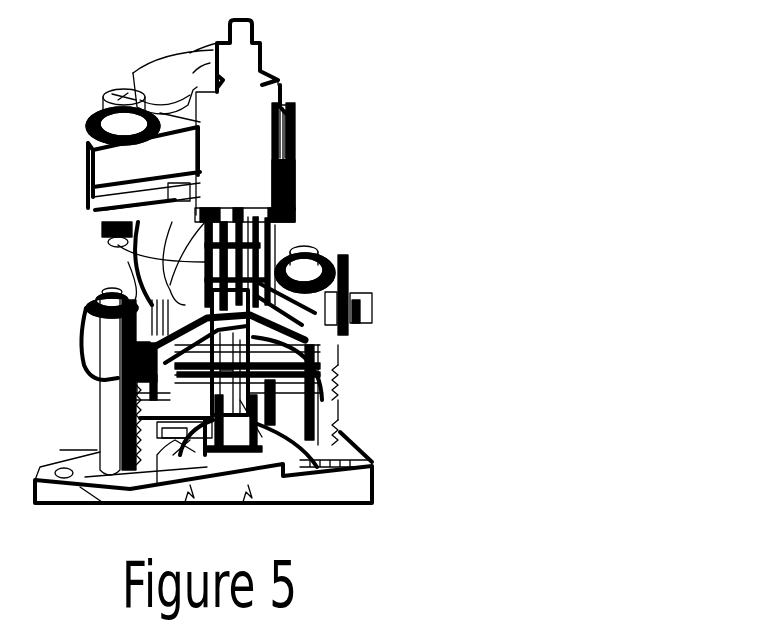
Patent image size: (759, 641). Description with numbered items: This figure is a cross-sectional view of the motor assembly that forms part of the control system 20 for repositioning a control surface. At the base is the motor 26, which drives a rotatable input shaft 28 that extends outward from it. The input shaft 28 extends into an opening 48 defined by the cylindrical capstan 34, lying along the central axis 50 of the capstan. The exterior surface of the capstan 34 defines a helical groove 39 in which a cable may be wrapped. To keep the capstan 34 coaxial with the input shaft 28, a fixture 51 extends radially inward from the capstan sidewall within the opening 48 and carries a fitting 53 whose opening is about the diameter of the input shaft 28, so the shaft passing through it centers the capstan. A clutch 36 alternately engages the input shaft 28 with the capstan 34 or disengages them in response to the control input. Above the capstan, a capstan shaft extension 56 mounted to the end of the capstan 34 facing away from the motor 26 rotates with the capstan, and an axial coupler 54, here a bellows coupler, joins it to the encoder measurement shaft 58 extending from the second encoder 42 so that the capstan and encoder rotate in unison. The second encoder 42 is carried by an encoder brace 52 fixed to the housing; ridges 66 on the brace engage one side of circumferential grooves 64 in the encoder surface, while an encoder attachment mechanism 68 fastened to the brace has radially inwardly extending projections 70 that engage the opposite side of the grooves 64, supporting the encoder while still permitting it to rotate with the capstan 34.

The control system 20 is at (418, 213).
The motor 26 is at (360, 485).
The input shaft 28 is at (230, 393).
The capstan 34 is at (332, 397).
The clutch 36 is at (100, 397).
The helical groove 39 is at (333, 368).
The second encoder 42 is at (268, 99).
The opening 48 is at (307, 412).
The central axis 50 is at (122, 423).
The fixture 51 is at (180, 442).
The encoder brace 52 is at (190, 266).
The fitting 53 is at (258, 232).
The axial coupler 54 is at (192, 457).
The capstan shaft extension 56 is at (333, 290).
The encoder measurement shaft 58 is at (233, 223).
The circumferential grooves 64 is at (282, 157).
The circumferential ridges 66 is at (295, 167).
The encoder attachment mechanism 68 is at (90, 198).
The radially inwardly extending projections 70 is at (128, 243).